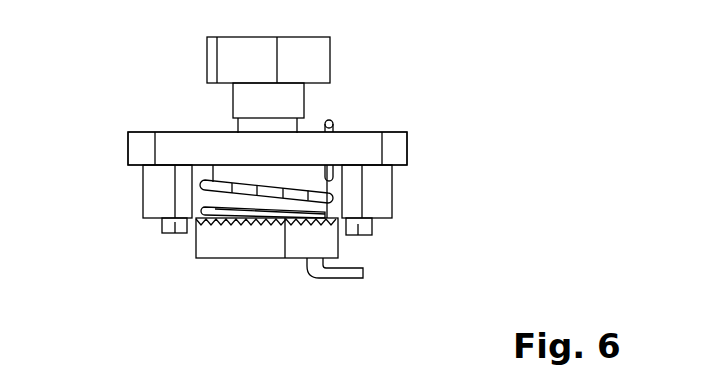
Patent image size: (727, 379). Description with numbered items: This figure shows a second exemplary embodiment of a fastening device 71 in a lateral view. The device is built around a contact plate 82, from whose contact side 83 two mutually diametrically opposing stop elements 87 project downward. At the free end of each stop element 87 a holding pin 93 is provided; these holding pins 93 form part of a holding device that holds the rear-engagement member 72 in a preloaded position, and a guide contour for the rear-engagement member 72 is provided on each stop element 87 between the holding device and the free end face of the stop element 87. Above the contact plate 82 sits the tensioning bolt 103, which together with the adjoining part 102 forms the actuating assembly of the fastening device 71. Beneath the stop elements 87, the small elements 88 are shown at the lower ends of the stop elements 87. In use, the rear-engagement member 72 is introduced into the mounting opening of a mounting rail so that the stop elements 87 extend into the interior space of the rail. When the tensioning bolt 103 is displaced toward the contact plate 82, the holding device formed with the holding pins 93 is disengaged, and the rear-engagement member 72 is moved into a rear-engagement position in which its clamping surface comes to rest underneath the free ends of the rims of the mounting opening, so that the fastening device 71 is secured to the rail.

The fastening device 71 is at (455, 78).
The rear-engagement member 72 is at (253, 240).
The contact plate 82 is at (397, 147).
The contact side 83 is at (187, 167).
The stop element 87 is at (148, 195).
The fastening element 88 is at (148, 220).
The holding pin 93 is at (175, 228).
The actuator assembly 102 is at (207, 101).
The tensioning bolt 103 is at (332, 53).